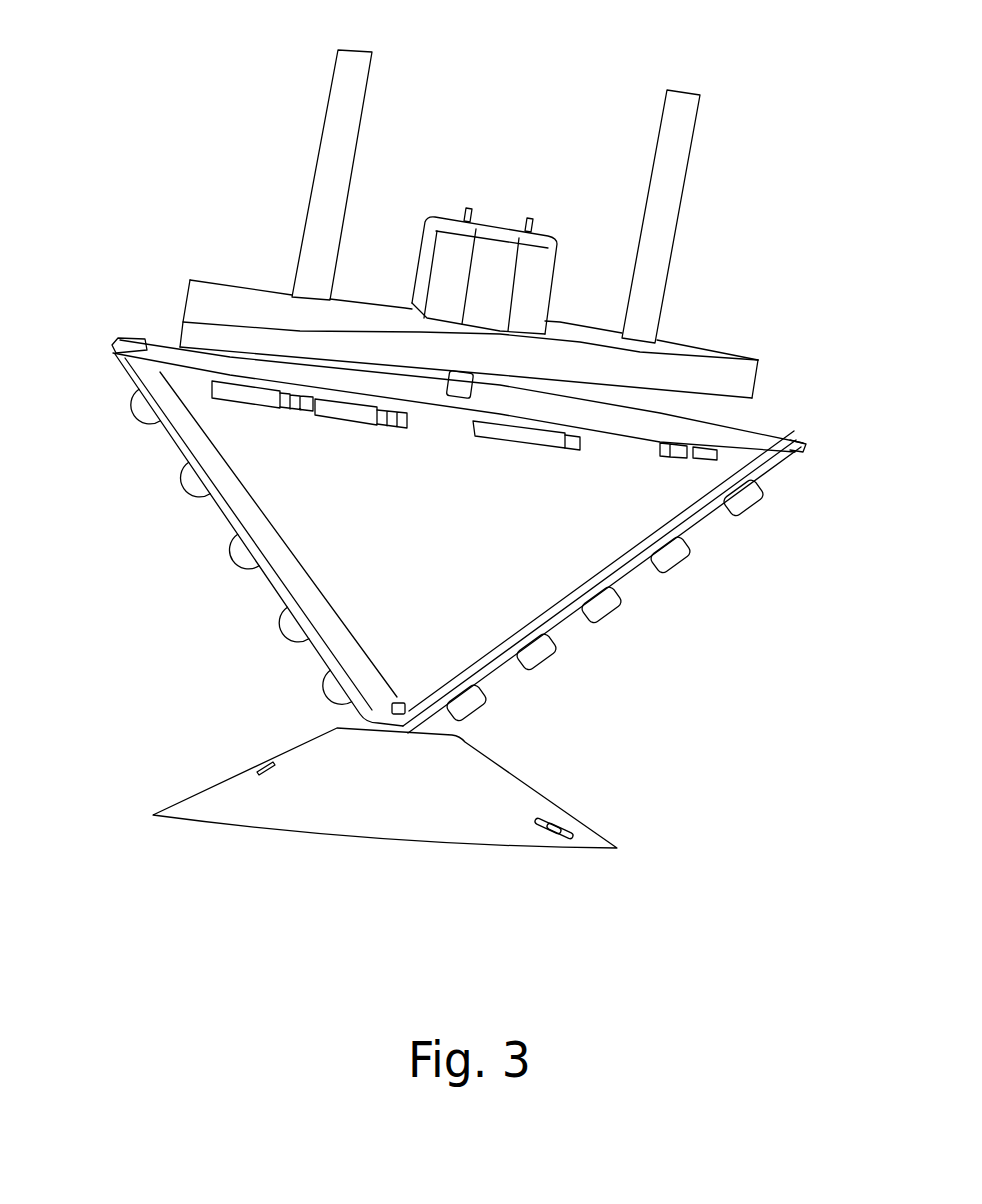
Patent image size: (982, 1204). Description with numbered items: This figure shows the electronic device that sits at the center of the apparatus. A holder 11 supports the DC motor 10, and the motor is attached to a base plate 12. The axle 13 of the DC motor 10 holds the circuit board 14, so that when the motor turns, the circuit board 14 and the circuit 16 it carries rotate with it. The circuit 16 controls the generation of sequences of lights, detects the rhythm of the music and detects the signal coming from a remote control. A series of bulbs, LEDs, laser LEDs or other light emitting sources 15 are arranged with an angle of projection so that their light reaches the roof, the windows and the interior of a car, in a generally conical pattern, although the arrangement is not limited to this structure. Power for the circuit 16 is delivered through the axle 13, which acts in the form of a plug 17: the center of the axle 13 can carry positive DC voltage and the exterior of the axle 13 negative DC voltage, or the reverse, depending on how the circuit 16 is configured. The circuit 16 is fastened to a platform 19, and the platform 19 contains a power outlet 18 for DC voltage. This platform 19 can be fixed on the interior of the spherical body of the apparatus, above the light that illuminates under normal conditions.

The DC motor 10 is at (502, 260).
The holder 11 is at (348, 90).
The base plate 12 is at (240, 307).
The axle 13 is at (250, 357).
The circuit board 14 is at (257, 365).
The light emitting sources 15 is at (193, 477).
The circuit 16 is at (513, 437).
The plug 17 is at (398, 710).
The power outlet 18 is at (573, 822).
The platform 19 is at (447, 773).